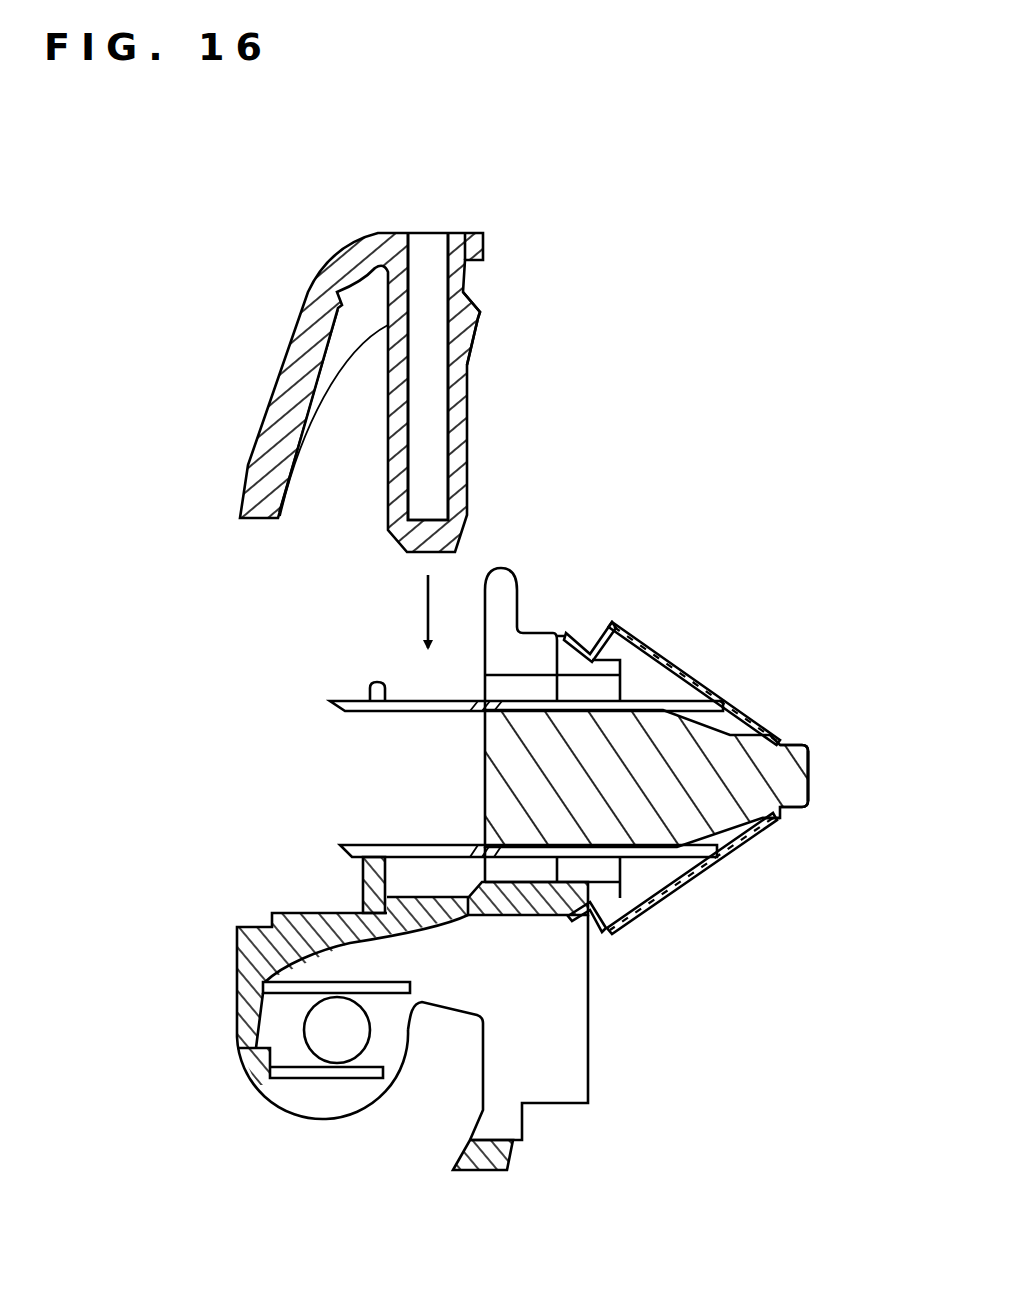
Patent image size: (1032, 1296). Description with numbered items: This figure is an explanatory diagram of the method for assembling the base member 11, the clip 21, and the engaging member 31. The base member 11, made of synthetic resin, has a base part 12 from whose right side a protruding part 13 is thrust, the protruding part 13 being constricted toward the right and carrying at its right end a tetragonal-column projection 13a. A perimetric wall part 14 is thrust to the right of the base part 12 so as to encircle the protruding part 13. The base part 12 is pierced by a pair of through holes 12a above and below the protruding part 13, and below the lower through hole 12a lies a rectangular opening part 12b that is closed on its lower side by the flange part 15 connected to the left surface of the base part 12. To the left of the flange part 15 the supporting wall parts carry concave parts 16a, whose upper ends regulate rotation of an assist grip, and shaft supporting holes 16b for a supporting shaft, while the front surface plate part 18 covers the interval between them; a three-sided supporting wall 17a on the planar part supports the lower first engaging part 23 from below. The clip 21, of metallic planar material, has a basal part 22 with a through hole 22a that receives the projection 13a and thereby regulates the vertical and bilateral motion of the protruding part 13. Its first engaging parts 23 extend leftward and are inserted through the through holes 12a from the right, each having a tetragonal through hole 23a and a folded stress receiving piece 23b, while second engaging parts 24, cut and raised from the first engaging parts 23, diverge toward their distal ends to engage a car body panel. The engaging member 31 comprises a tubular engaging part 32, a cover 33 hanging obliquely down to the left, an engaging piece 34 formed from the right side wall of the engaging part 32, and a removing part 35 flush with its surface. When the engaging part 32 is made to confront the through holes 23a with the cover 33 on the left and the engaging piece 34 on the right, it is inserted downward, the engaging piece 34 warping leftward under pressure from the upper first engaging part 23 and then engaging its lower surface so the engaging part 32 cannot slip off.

The base member 11 is at (514, 568).
The base part 12 is at (493, 780).
The through hole 12a is at (515, 690).
The rectangular opening part 12b is at (575, 1078).
The protruding part 13 is at (752, 770).
The projection 13a is at (792, 783).
The perimetric wall part 14 is at (605, 656).
The flange part 15 is at (497, 1163).
The concave part 16a is at (448, 1048).
The shaft supporting hole 16b is at (332, 1050).
The supporting wall 17a is at (405, 897).
The front surface plate part 18 is at (258, 950).
The clip 21 is at (747, 697).
The basal part 22 is at (775, 822).
The through hole 22a is at (780, 818).
The first engaging part 23 is at (345, 702).
The through hole 23a is at (413, 713).
The stress receiving piece 23b is at (373, 700).
The second engaging part 24 is at (690, 682).
The engaging member 31 is at (298, 282).
The engaging part 32 is at (437, 432).
The cover 33 is at (268, 420).
The engaging piece 34 is at (480, 318).
The removing part 35 is at (477, 243).